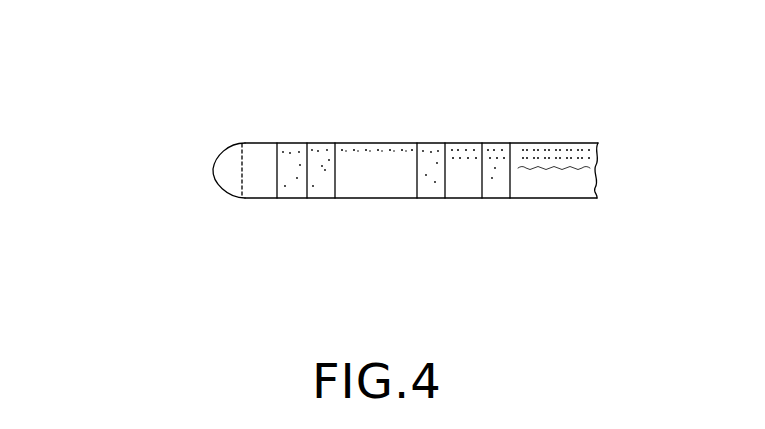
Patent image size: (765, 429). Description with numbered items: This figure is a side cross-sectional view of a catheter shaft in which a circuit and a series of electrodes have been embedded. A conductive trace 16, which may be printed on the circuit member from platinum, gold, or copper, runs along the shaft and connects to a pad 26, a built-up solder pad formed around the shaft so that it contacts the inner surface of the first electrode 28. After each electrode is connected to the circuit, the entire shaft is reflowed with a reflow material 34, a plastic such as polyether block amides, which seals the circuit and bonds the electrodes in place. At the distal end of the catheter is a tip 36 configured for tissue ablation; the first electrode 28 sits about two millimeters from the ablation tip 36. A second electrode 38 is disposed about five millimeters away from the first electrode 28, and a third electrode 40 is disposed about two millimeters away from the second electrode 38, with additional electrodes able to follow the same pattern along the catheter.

The trace 16 is at (353, 143).
The reflow material 34 is at (393, 143).
The pad 26 is at (316, 163).
The electrode 28 is at (322, 182).
The tip 36 is at (213, 169).
The second electrode 38 is at (435, 198).
The third electrode 40 is at (500, 198).